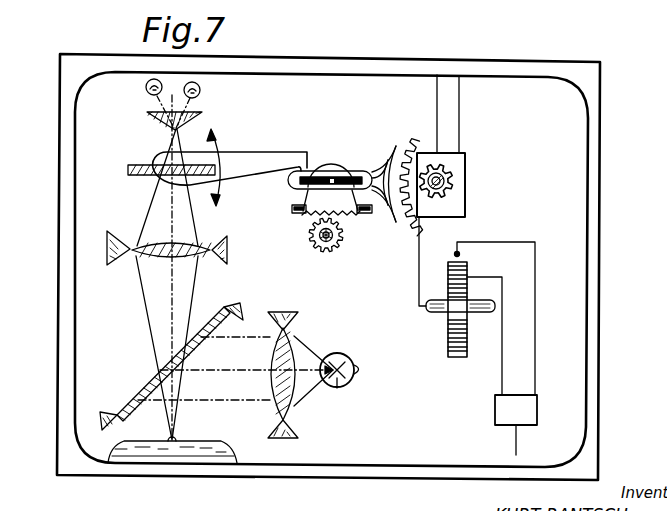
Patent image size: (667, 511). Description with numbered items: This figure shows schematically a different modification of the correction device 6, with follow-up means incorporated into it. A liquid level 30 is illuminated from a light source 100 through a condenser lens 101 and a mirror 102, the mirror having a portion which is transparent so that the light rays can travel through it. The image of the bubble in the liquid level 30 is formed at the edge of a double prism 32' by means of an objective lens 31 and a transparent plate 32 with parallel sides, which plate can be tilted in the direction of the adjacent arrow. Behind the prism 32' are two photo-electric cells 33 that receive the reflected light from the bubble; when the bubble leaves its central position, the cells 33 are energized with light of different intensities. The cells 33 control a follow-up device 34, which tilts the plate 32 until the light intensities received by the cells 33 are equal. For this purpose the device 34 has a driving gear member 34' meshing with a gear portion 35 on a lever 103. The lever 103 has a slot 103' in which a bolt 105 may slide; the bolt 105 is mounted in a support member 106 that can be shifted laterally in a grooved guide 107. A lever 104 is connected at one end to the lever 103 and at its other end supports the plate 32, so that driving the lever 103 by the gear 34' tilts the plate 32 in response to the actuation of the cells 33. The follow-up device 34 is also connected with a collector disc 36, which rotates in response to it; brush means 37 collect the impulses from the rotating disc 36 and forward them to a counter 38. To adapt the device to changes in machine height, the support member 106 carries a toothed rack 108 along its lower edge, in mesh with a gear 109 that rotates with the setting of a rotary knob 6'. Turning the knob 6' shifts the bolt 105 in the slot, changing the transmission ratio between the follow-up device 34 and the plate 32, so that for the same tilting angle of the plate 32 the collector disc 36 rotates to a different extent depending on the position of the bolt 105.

The correction device 6 is at (328, 282).
The rotary knob 6' is at (345, 250).
The liquid level 30 is at (216, 447).
The objective lens 31 is at (142, 258).
The transparent plate 32 is at (159, 192).
The double prism 32' is at (156, 128).
The photo-electric cells 33 is at (148, 91).
The follow-up device 34 is at (465, 190).
The driving gear member 34' is at (466, 164).
The gear portion 35 is at (394, 147).
The collector disc 36 is at (449, 352).
The brush means 37 is at (463, 255).
The counter 38 is at (530, 408).
The light source 100 is at (337, 388).
The condenser lens 101 is at (297, 345).
The mirror 102 is at (149, 387).
The lever 103 is at (376, 182).
The slot 103' is at (309, 187).
The lever 104 is at (246, 155).
The bolt 105 is at (333, 176).
The support member 106 is at (297, 210).
The grooved guide 107 is at (370, 215).
The toothed rack 108 is at (318, 220).
The gear 109 is at (325, 253).